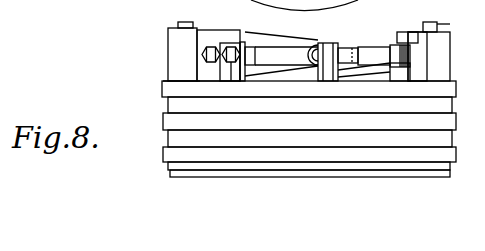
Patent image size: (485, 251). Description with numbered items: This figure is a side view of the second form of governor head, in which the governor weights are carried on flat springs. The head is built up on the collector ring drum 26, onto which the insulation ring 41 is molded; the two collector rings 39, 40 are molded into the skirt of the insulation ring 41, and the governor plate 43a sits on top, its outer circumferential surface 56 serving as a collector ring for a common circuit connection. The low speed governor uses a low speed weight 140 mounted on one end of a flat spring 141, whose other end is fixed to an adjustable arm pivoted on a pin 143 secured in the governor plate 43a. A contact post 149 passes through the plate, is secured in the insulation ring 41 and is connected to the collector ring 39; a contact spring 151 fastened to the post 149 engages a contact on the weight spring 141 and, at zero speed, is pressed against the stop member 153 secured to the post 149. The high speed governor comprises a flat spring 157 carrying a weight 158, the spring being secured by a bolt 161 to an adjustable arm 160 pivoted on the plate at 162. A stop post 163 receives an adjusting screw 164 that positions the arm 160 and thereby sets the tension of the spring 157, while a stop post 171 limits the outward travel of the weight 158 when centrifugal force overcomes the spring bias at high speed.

The collector ring drum 26 is at (170, 175).
The collector ring 39 is at (163, 152).
The collector ring 40 is at (163, 120).
The insulation ring 41 is at (168, 104).
The governor plate 43a is at (163, 81).
The outer circumferential surface 56 is at (162, 90).
The low speed weight 140 is at (340, 36).
The flat spring 141 is at (401, 32).
The pin 143 is at (438, 25).
The contact post 149 is at (414, 32).
The contact spring 151 is at (347, 48).
The stop member 153 is at (371, 47).
The flat spring 157 is at (282, 38).
The weight 158 is at (306, 45).
The adjustable arm 160 is at (255, 56).
The bolt 161 is at (203, 47).
The pivot 162 is at (178, 25).
The stop post 163 is at (232, 43).
The adjusting screw 164 is at (231, 65).
The stop post 171 is at (344, 81).